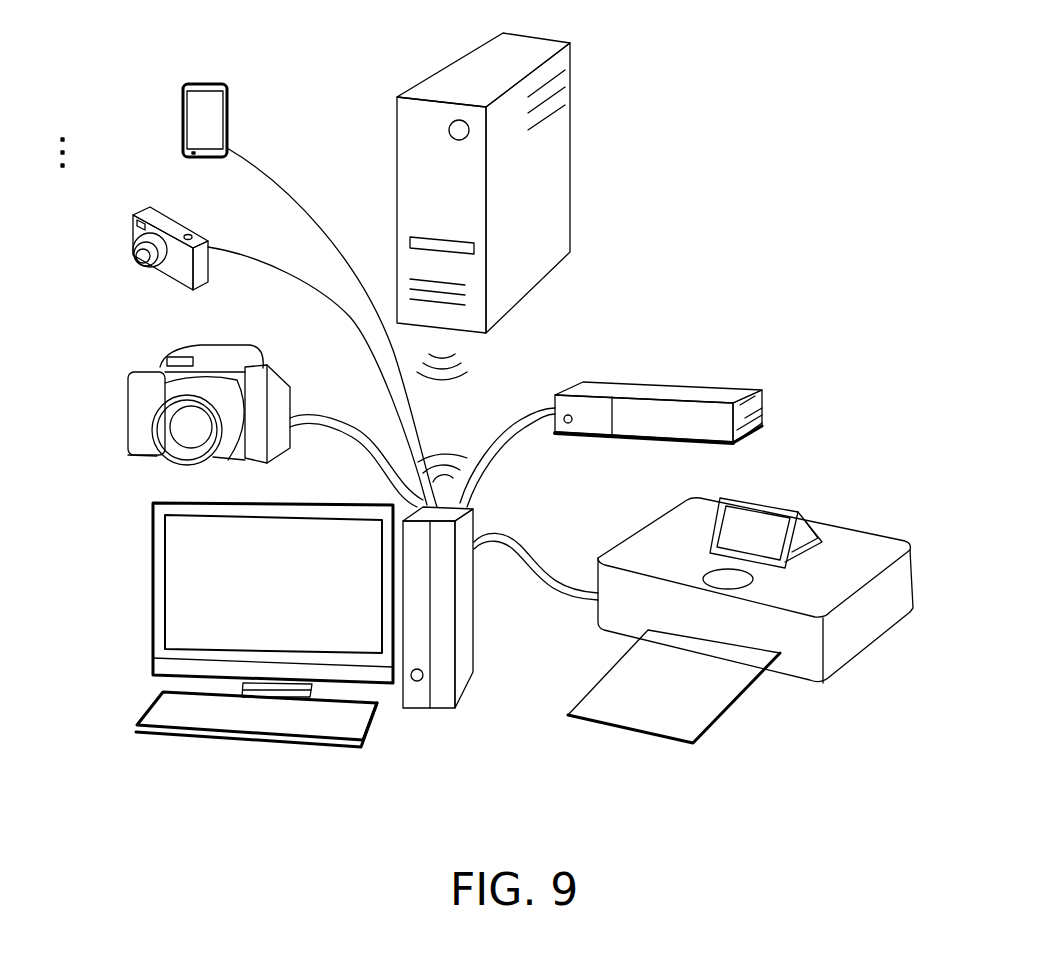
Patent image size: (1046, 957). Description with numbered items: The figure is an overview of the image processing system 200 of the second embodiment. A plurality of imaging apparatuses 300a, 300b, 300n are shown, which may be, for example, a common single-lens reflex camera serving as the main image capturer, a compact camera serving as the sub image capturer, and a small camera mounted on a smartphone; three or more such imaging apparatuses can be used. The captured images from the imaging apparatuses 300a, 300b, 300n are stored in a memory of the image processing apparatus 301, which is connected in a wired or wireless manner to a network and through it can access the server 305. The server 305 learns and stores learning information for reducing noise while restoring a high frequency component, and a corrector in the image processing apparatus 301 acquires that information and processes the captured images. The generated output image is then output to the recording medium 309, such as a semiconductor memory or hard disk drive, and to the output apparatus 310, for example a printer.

The image processing system 200 is at (759, 90).
The imaging apparatus 300a is at (130, 374).
The imaging apparatus 300b is at (133, 215).
The imaging apparatus 300n is at (183, 105).
The image processing apparatus 301 is at (438, 712).
The server 305 is at (397, 97).
The recording medium 309 is at (765, 392).
The output apparatus 310 is at (848, 532).